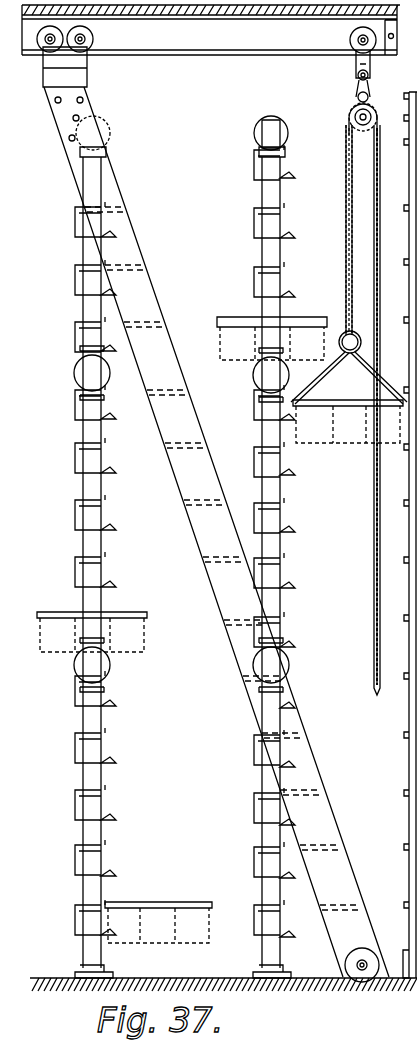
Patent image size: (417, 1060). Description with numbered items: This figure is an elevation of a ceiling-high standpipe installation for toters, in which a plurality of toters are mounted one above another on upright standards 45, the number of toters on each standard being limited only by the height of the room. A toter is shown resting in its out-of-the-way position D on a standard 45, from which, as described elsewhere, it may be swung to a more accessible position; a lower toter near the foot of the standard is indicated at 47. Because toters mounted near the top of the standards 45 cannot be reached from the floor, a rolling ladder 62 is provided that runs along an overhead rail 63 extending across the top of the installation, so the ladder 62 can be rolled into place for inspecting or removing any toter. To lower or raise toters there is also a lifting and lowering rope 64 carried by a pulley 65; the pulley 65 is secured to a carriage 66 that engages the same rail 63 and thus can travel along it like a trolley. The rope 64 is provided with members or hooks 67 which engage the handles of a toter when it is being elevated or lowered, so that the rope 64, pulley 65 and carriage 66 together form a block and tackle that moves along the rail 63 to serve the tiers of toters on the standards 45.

The rail 63 is at (180, 47).
The carriage 66 is at (352, 69).
The pulley 65 is at (347, 110).
The lifting and lowering rope 64 is at (376, 557).
The members or hooks 67 is at (349, 387).
The rolling ladder 62 is at (136, 243).
The standards 45 is at (101, 497).
The out-of-the-way position D is at (118, 612).
The lower platform 47 is at (158, 908).